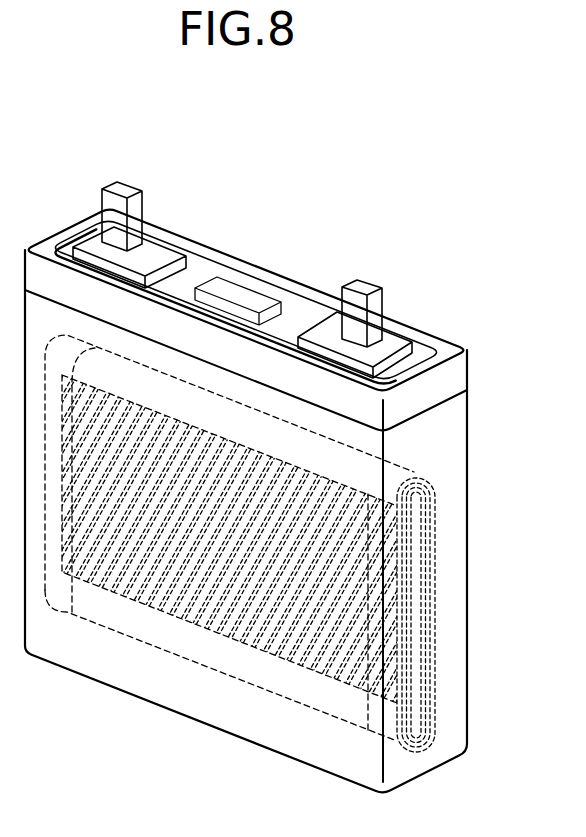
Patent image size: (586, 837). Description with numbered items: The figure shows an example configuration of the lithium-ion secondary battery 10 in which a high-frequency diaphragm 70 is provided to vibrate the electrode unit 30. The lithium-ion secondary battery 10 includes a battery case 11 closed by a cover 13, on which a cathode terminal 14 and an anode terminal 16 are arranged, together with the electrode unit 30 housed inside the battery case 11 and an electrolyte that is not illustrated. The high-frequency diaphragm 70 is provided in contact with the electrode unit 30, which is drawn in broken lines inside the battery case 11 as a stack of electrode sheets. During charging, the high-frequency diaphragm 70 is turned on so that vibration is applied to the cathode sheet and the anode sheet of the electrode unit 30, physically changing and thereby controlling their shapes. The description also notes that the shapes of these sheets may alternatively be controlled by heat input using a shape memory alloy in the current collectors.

The lithium-ion secondary battery 10 is at (256, 240).
The battery case 11 is at (452, 648).
The cover 13 is at (449, 352).
The cathode terminal 14 is at (360, 285).
The anode terminal 16 is at (117, 187).
The electrode unit 30 is at (446, 528).
The high-frequency diaphragm 70 is at (207, 628).